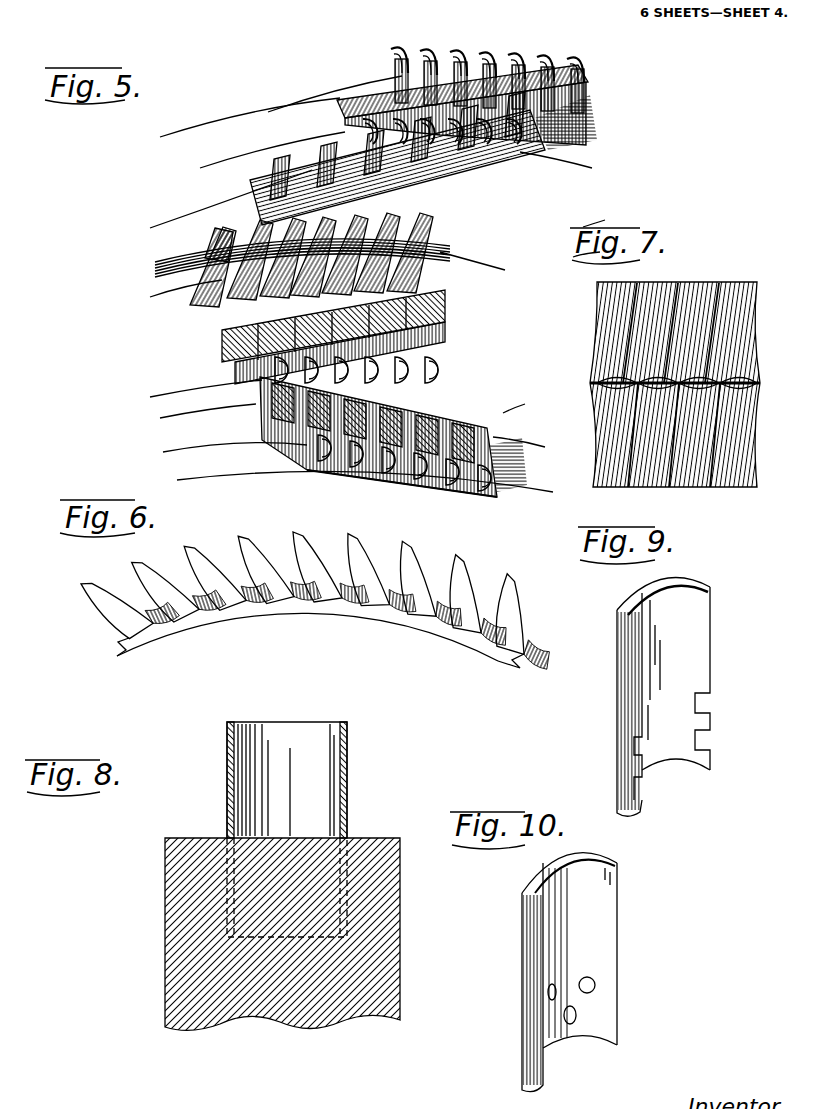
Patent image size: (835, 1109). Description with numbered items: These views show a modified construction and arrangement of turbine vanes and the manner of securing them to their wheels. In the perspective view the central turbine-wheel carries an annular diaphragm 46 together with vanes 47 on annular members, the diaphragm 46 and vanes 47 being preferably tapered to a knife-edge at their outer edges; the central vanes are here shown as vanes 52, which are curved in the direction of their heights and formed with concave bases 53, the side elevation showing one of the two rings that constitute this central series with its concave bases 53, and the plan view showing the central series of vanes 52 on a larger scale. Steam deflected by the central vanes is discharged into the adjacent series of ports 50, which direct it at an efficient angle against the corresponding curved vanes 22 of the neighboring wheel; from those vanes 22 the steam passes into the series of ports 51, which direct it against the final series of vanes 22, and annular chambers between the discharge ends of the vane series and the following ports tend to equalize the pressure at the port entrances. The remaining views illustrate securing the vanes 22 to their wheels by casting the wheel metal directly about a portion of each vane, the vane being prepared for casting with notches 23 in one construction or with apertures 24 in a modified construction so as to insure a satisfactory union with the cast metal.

In FIG. 5, the vanes 22 is at (548, 72).
In FIG. 8, the vanes 22 is at (305, 765).
In FIG. 9, the vanes 22 is at (633, 667).
In FIG. 9, the notches 23 is at (700, 750).
In FIG. 10, the apertures 24 is at (578, 1010).
In FIG. 5, the annular diaphragm 46 is at (443, 270).
In FIG. 5, the vanes 47 is at (447, 250).
In FIG. 5, the ports 50 is at (443, 177).
In FIG. 5, the ports 51 is at (385, 82).
In FIG. 5, the vanes 52 is at (217, 270).
In FIG. 6, the vanes 52 is at (328, 522).
In FIG. 7, the vanes 52 is at (672, 302).
In FIG. 6, the concave bases 53 is at (185, 612).